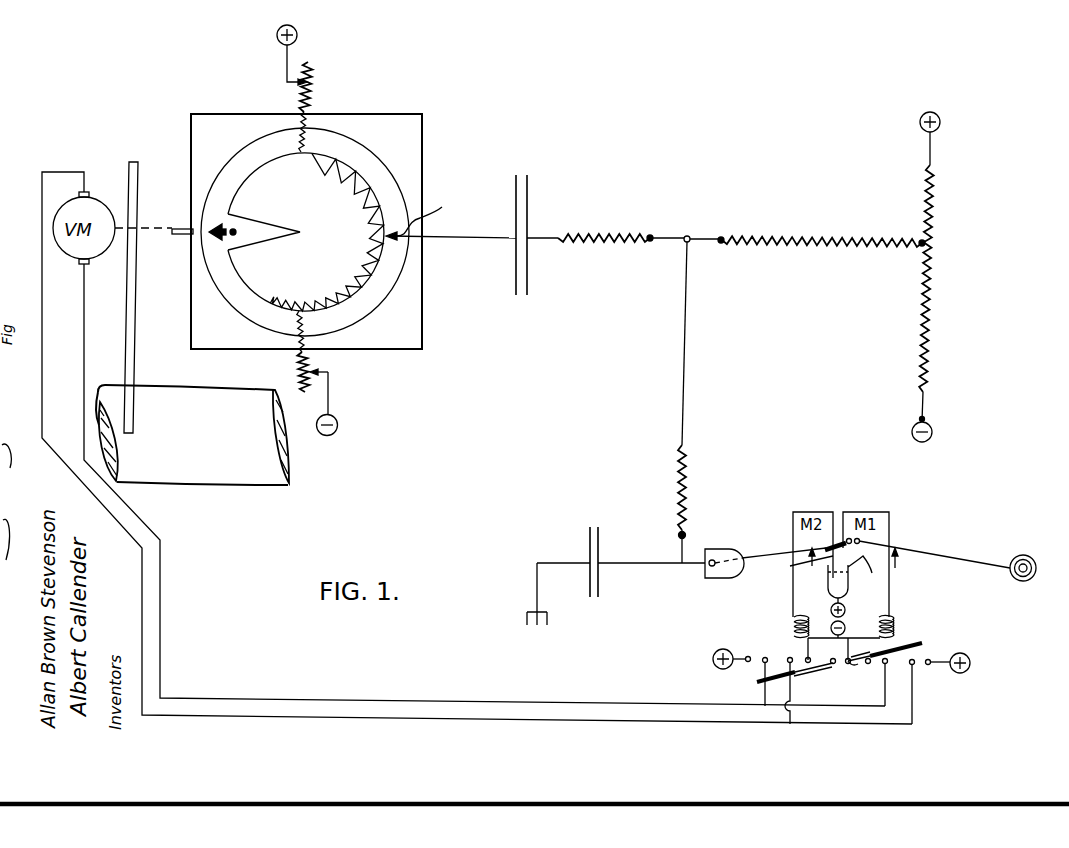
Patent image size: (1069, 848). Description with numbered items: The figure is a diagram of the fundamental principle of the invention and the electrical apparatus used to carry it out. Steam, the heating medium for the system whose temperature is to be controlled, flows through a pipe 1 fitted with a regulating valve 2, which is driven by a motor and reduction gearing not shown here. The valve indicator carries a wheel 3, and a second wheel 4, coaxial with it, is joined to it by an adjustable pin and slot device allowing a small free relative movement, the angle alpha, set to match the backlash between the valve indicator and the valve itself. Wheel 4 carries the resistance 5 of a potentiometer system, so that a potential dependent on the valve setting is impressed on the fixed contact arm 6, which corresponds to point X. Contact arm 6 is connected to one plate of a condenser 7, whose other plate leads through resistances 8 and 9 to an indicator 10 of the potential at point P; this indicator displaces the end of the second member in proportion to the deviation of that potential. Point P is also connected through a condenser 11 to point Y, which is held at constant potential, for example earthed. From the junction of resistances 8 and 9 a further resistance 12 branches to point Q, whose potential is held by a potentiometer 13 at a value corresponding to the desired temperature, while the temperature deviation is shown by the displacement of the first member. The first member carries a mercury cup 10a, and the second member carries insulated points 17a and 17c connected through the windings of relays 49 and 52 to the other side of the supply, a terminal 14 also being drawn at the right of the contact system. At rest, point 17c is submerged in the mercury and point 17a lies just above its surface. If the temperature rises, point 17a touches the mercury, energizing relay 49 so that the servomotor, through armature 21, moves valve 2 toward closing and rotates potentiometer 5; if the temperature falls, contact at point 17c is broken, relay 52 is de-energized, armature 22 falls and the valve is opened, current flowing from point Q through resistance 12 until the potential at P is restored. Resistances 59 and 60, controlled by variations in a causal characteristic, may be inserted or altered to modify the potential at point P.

The pipe 1 is at (192, 435).
The regulating valve 2 is at (117, 297).
The wheel 3 is at (392, 172).
The second wheel 4 is at (254, 216).
The resistance of potentiometer system 5 is at (326, 232).
The fixed contact arm 6 is at (451, 231).
The condenser 7 is at (537, 223).
The resistance 8 is at (641, 227).
The resistance 9 is at (671, 402).
The indicator 10 is at (724, 577).
The mercury cup 10a is at (846, 588).
The condenser 11 is at (609, 576).
The resistance 12 is at (823, 230).
The potentiometer 13 is at (938, 277).
The terminal 14 is at (947, 558).
The insulated point 17a is at (812, 568).
The insulated point 17c is at (858, 560).
The armature 21 is at (757, 681).
The armature 22 is at (926, 648).
The relay 49 is at (794, 628).
The relay 52 is at (893, 627).
The resistance 59 is at (316, 74).
The resistance 60 is at (302, 373).